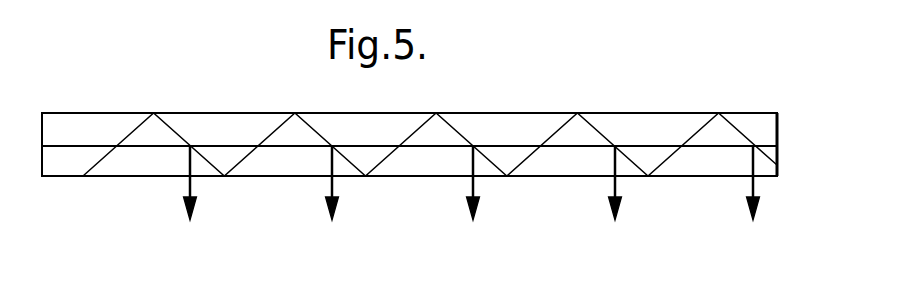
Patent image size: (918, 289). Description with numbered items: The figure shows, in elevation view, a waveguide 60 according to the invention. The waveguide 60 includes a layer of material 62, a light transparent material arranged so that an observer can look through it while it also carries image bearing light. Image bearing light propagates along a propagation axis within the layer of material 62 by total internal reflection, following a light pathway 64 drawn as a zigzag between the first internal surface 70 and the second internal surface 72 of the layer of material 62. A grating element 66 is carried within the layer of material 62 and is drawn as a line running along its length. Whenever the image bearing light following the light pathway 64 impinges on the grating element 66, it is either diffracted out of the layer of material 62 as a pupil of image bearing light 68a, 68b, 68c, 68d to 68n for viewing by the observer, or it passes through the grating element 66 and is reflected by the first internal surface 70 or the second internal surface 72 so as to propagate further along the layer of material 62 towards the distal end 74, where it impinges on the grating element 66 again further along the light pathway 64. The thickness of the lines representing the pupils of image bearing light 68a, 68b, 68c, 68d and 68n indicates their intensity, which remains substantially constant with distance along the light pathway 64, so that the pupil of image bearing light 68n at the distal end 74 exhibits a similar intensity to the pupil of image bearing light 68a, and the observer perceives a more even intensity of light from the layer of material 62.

The waveguide 60 is at (236, 112).
The layer of material 62 is at (95, 112).
The light pathway 64 is at (167, 124).
The grating element 66 is at (362, 145).
The first internal surface 70 is at (492, 115).
The second internal surface 72 is at (563, 173).
The distal end 74 is at (778, 132).
The pupil of image bearing light 68a is at (195, 205).
The pupil of image bearing light 68b is at (337, 205).
The pupil of image bearing light 68c is at (478, 205).
The pupil of image bearing light 68d is at (620, 205).
The pupil of image bearing light 68n is at (758, 205).